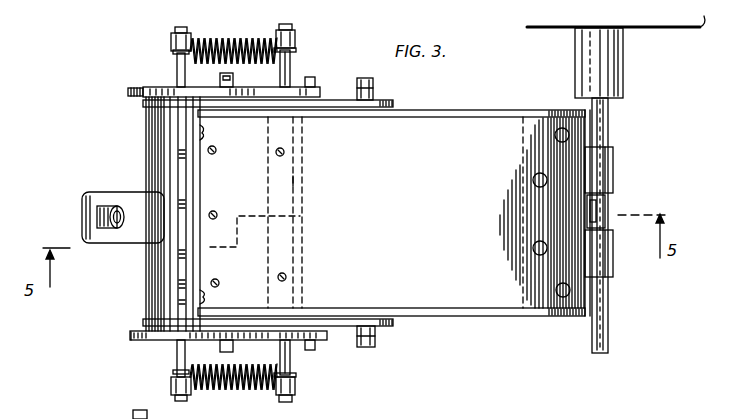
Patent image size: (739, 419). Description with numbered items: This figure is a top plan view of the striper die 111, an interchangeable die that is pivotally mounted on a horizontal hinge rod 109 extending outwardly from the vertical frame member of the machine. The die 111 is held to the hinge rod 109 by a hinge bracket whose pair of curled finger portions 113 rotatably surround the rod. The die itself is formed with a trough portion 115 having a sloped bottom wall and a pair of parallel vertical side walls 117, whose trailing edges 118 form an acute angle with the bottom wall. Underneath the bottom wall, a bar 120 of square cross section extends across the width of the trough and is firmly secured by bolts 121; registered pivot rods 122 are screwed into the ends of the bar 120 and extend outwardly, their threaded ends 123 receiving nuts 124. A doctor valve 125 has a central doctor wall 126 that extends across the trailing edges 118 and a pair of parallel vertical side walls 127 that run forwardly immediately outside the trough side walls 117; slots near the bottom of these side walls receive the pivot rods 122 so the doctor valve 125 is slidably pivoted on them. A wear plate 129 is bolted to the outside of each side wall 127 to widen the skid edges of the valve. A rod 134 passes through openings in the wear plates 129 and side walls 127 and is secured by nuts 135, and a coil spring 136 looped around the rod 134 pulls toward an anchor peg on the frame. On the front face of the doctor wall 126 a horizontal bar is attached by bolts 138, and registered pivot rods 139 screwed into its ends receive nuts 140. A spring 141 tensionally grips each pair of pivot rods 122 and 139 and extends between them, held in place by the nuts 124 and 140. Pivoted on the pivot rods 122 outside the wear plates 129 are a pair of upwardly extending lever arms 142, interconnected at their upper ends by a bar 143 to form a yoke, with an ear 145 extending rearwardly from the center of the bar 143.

The hinge rod 109 is at (609, 128).
The striper die 111 is at (488, 344).
The curled finger portions 113 is at (614, 174).
The trough portion 115 is at (533, 77).
The side walls 117 is at (480, 97).
The trailing edges 118 is at (204, 128).
The bar 120 is at (295, 181).
The bolts 121 is at (276, 152).
The pivot rods 122 is at (291, 74).
The threaded ends 123 is at (292, 398).
The nuts 124 is at (295, 45).
The doctor valve 125 is at (201, 172).
The doctor wall 126 is at (203, 199).
The side walls 127 is at (392, 108).
The wear plate 129 is at (470, 290).
The rod 134 is at (372, 346).
The nuts 135 is at (374, 94).
The coil spring 136 is at (593, 209).
The bolts 138 is at (206, 298).
The pivot rods 139 is at (177, 68).
The nuts 140 is at (171, 43).
The spring 141 is at (255, 40).
The lever arms 142 is at (131, 337).
The bar 143 is at (180, 284).
The ear 145 is at (133, 244).